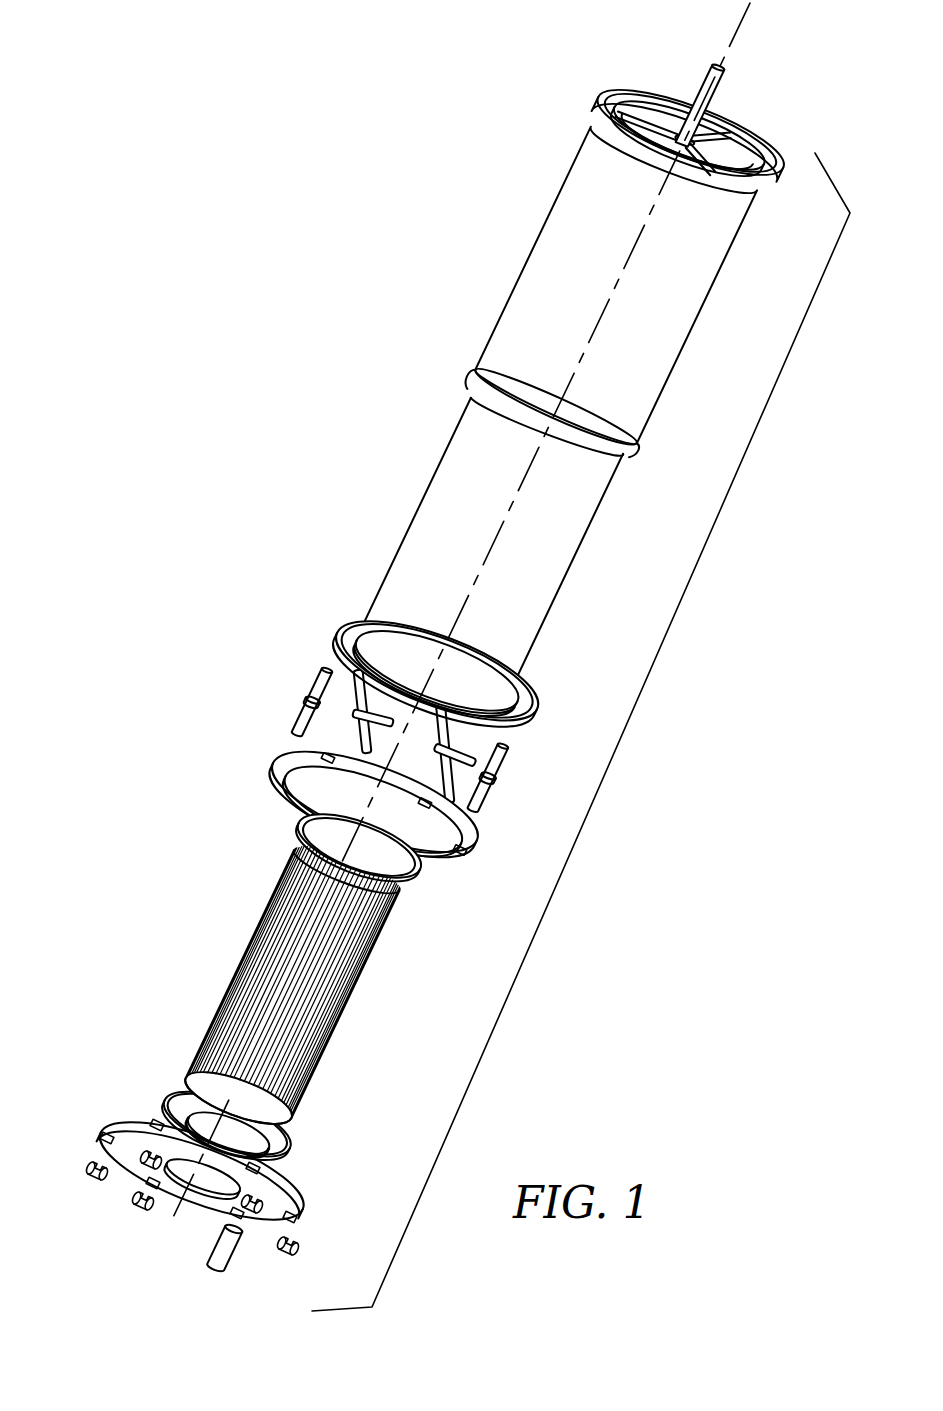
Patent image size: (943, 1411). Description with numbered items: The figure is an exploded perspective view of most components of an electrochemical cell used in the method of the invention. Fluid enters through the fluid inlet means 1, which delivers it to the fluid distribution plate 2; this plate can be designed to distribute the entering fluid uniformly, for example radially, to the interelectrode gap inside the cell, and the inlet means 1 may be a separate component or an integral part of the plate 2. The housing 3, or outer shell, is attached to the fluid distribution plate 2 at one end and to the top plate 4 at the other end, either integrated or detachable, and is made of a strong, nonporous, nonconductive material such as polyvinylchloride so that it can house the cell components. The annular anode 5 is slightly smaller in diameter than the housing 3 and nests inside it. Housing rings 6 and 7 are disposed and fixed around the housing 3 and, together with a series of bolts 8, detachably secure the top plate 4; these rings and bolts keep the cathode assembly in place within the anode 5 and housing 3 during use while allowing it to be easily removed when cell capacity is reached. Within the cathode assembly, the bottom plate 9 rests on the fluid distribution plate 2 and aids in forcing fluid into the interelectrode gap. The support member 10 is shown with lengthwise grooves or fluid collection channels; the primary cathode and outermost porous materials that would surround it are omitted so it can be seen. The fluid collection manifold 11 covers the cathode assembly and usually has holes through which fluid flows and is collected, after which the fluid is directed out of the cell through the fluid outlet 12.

The fluid inlet means 1 is at (703, 65).
The fluid distribution plate 2 is at (617, 83).
The housing 3 is at (538, 233).
The top plate 4 is at (107, 1122).
The annular anode 5 is at (427, 503).
The housing ring 6 is at (288, 752).
The housing ring 7 is at (343, 618).
The bolts 8 is at (303, 717).
The bottom plate 9 is at (303, 818).
The support member 10 is at (230, 983).
The fluid collection manifold 11 is at (170, 1092).
The fluid outlet 12 is at (220, 1238).